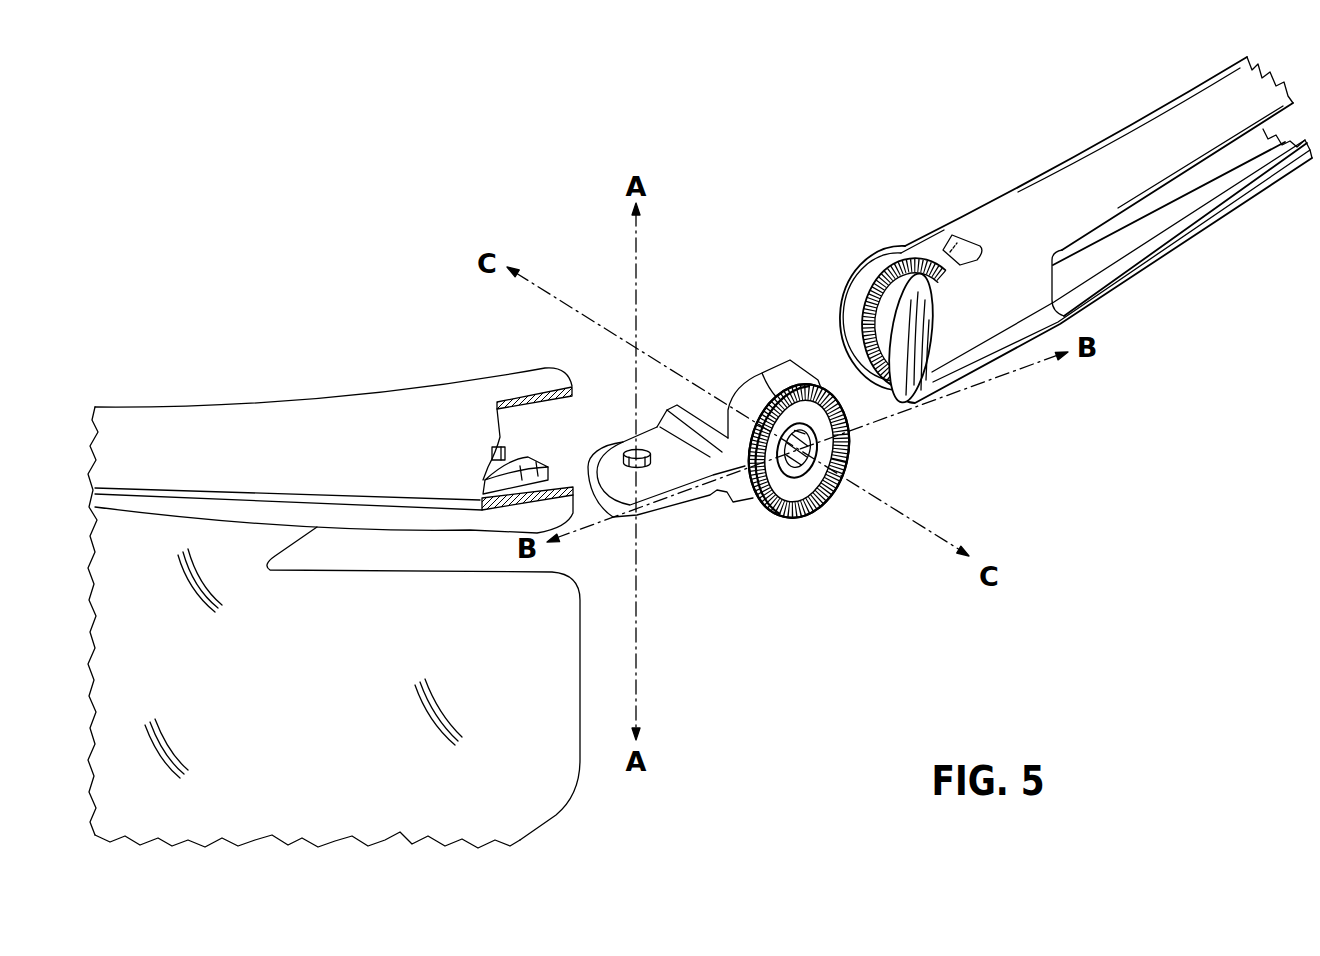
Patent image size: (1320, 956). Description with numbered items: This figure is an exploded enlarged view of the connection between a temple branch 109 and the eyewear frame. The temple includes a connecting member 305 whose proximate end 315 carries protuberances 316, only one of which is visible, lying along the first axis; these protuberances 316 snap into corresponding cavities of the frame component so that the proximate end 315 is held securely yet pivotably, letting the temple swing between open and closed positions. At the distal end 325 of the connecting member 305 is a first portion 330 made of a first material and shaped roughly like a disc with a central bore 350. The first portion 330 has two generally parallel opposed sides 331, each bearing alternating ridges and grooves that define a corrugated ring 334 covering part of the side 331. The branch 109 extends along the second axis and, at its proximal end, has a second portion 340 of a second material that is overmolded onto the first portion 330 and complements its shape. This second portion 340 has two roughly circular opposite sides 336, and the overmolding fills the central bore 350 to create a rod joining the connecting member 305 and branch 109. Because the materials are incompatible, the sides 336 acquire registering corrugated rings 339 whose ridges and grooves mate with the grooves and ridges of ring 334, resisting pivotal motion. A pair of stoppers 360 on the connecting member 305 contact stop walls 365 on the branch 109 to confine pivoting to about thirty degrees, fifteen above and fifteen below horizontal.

The branch 109 is at (1060, 231).
The connecting member 305 is at (695, 412).
The proximate end 315 is at (659, 497).
The protuberance 316 is at (630, 448).
The distal end 325 is at (832, 449).
The first portion 330 is at (820, 417).
The opposed side 331 is at (773, 483).
The corrugated ring 334 is at (781, 512).
The opposite side 336 is at (893, 296).
The corrugated ring 339 is at (877, 295).
The second portion 340 is at (907, 292).
The central bore 350 is at (805, 444).
The stopper 360 is at (788, 376).
The stop wall 365 is at (963, 247).